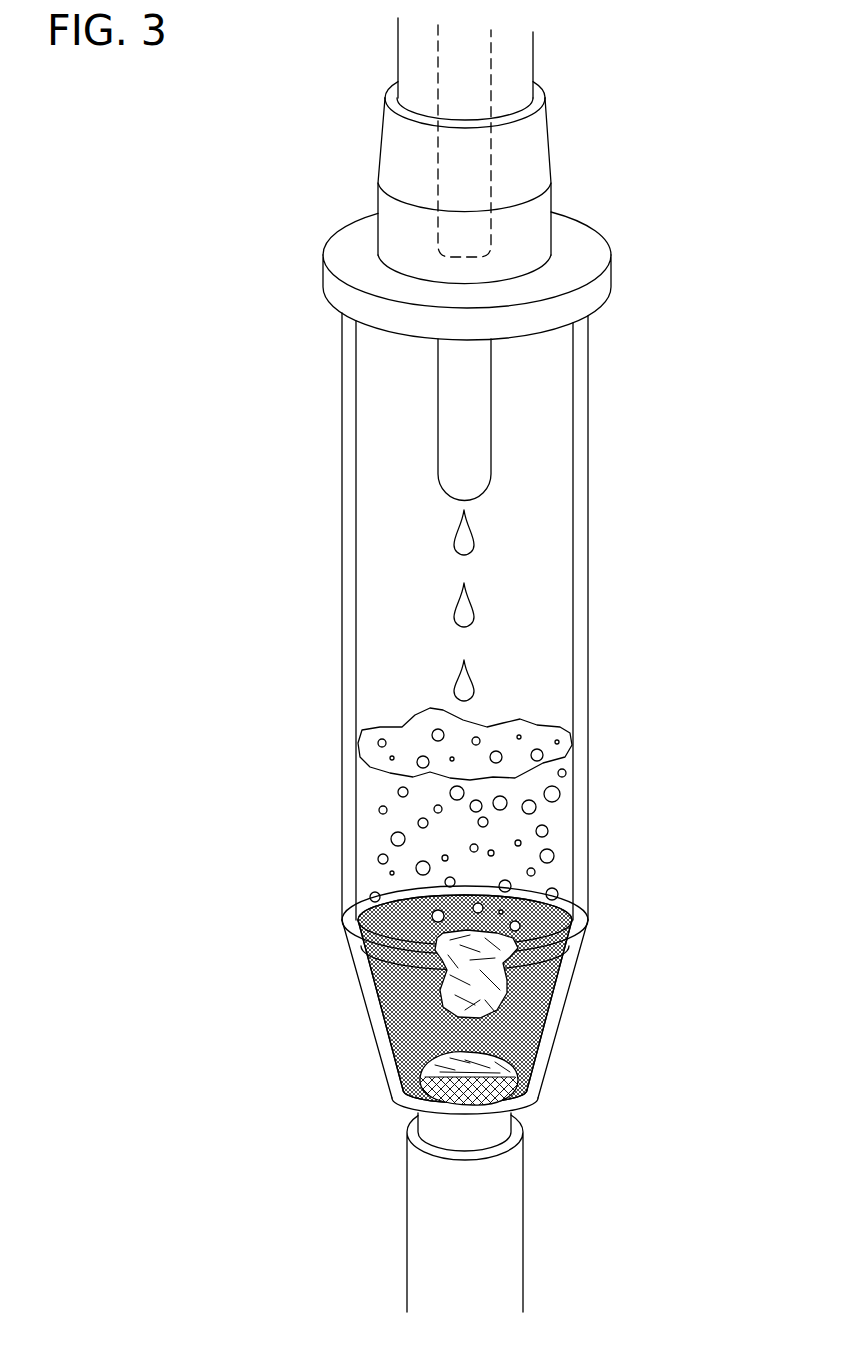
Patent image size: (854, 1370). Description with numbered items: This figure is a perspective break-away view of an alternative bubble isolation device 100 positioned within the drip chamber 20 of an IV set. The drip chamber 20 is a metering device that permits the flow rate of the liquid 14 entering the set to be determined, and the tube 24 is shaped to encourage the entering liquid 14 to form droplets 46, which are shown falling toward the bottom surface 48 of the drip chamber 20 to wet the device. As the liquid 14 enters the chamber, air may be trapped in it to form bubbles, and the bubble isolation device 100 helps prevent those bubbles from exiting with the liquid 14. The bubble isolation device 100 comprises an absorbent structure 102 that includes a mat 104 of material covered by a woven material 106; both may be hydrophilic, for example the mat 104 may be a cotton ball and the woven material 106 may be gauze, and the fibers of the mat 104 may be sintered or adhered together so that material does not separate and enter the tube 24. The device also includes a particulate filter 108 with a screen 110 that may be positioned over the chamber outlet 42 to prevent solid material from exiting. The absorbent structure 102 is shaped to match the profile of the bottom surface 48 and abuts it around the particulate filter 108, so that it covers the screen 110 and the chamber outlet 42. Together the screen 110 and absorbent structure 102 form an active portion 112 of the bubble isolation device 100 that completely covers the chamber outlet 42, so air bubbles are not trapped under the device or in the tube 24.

The drip chamber 20 is at (340, 414).
The droplets 46 is at (462, 540).
The liquid 14 is at (560, 812).
The bubble isolation device 100 is at (537, 895).
The absorbent structure 102 is at (432, 922).
The woven material 106 is at (543, 983).
The mat 104 is at (497, 940).
The bottom surface 48 is at (403, 1078).
The active portion 112 is at (517, 1045).
The screen 110 is at (396, 1090).
The particulate filter 108 is at (502, 1105).
The chamber outlet 42 is at (476, 1140).
The tube 24 is at (500, 1270).